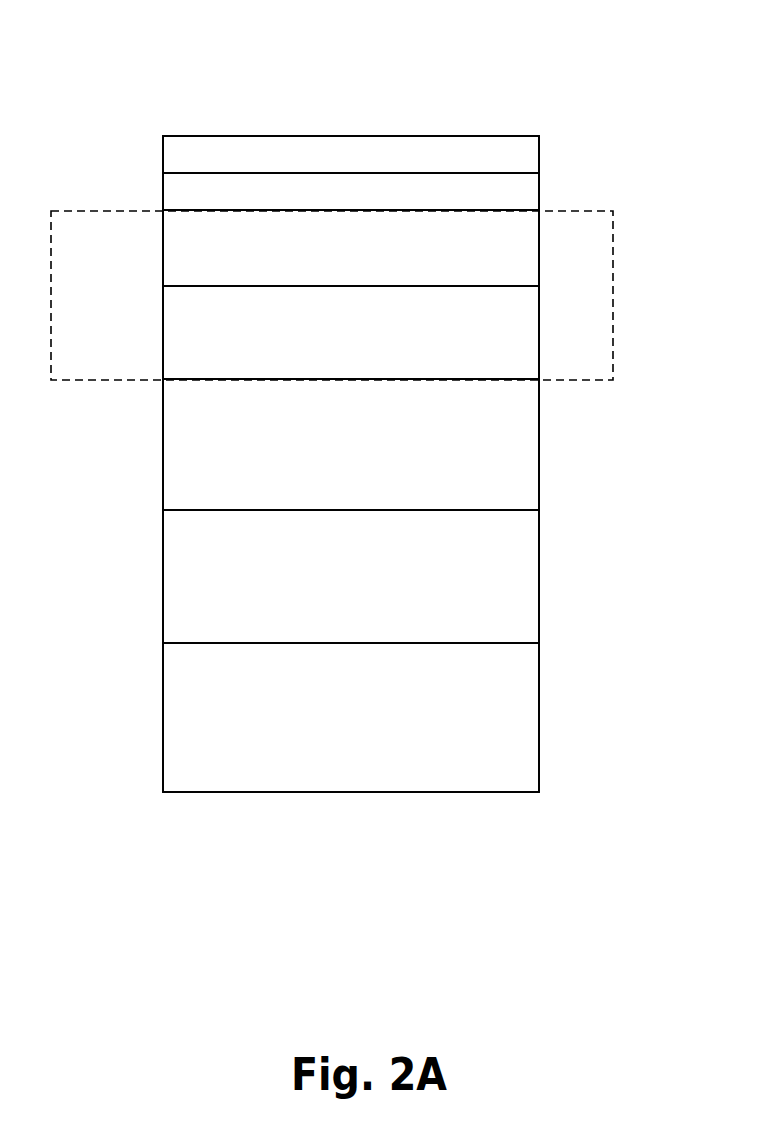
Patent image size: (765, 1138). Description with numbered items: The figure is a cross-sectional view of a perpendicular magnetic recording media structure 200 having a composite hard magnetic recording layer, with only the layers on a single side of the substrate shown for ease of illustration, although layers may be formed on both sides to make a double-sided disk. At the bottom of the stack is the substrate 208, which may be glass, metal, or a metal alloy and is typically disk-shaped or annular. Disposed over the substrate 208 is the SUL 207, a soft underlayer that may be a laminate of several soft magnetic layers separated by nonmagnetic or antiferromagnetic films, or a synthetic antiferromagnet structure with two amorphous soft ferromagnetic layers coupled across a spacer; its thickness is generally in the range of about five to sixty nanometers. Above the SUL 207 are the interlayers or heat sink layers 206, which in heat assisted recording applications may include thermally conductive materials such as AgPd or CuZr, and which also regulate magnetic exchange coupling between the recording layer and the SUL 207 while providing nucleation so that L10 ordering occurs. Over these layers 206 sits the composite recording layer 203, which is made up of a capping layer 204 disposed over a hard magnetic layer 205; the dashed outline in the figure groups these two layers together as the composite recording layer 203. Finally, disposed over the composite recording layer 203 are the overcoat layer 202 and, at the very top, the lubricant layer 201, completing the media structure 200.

The PMR media structure 200 is at (367, 78).
The lubricant layer 201 is at (539, 148).
The overcoat layer 202 is at (539, 192).
The composite recording layer 203 is at (613, 249).
The capping layer 204 is at (163, 239).
The hard magnetic layer 205 is at (163, 305).
The interlayers or heat sink layers 206 is at (163, 428).
The SUL 207 is at (163, 568).
The substrate 208 is at (163, 708).